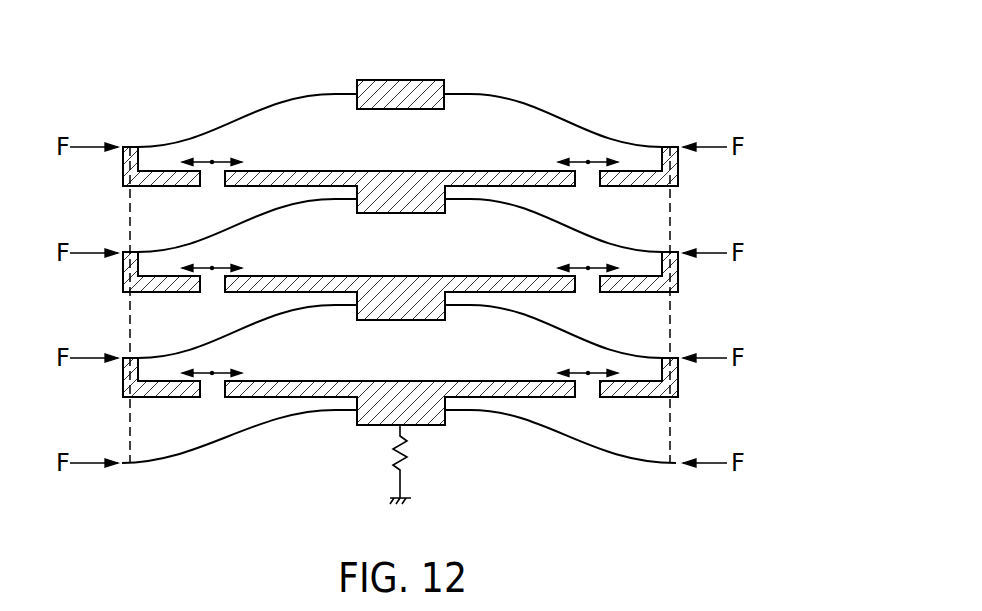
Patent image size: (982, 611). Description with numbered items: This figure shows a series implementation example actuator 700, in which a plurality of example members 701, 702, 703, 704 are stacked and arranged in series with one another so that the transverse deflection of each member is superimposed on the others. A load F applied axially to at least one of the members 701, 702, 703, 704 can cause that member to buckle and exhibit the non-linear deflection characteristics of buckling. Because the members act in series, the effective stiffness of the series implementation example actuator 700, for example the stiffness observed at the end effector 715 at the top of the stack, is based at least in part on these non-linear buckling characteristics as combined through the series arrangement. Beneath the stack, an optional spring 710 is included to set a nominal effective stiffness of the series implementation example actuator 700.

The series implementation example actuator 700 is at (597, 98).
The example member 701 is at (208, 137).
The example member 702 is at (152, 252).
The example member 703 is at (152, 358).
The example member 704 is at (152, 463).
The end effector 715 is at (400, 80).
The optional spring 710 is at (377, 458).